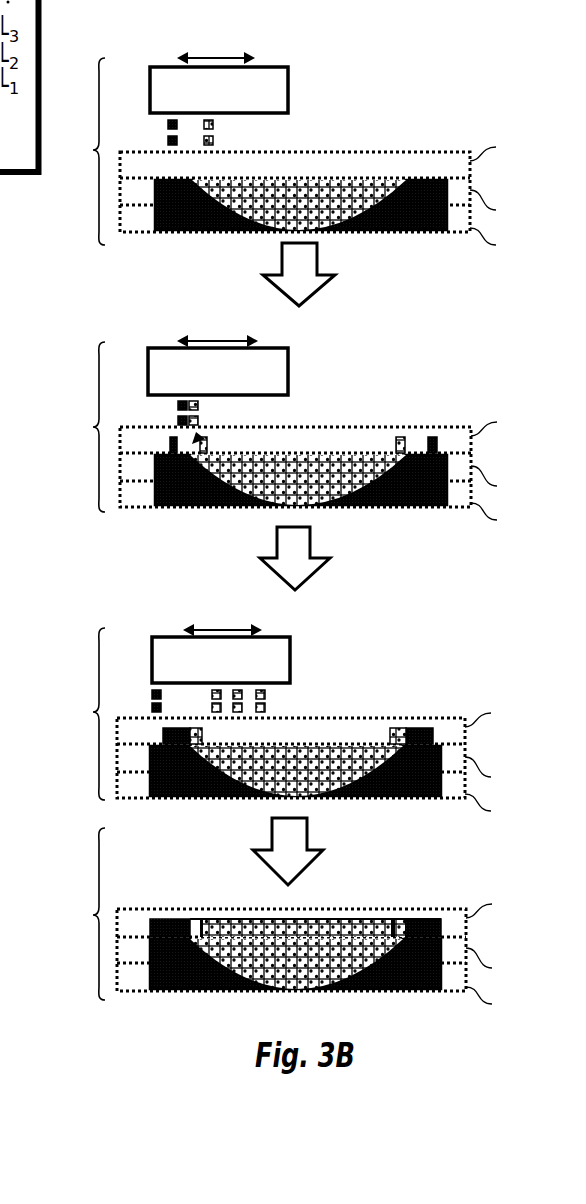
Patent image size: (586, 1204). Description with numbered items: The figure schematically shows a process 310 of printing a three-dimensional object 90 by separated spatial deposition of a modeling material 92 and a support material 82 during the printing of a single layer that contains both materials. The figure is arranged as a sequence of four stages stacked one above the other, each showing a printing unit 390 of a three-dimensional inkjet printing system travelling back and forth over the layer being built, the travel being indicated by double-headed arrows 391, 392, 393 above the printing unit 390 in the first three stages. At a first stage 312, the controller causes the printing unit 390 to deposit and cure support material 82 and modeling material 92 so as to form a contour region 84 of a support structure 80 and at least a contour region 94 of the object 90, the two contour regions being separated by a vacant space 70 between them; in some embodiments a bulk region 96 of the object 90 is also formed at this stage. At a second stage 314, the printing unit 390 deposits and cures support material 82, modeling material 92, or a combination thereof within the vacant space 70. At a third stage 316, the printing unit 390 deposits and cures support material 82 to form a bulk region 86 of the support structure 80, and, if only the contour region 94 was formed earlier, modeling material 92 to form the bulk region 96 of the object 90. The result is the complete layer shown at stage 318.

The process 310 is at (434, 52).
The first stage 312 is at (280, 159).
The second stage 314 is at (279, 440).
The third stage 316 is at (276, 728).
The stage 318 is at (278, 924).
The printing unit 390 is at (219, 375).
The print head traverse direction 391 is at (215, 57).
The print head traverse direction 392 is at (218, 342).
The print head traverse direction 393 is at (226, 631).
The support structure 80 is at (206, 196).
The 3D object 90 is at (312, 197).
The support material 82 is at (170, 124).
The modeling material 92 is at (208, 120).
The contour region of support structure 84 is at (171, 444).
The contour region of 3D object 94 is at (208, 445).
The bulk region of support structure 86 is at (158, 918).
The bulk region of 3D object 96 is at (378, 928).
The vacant space 70 is at (198, 434).